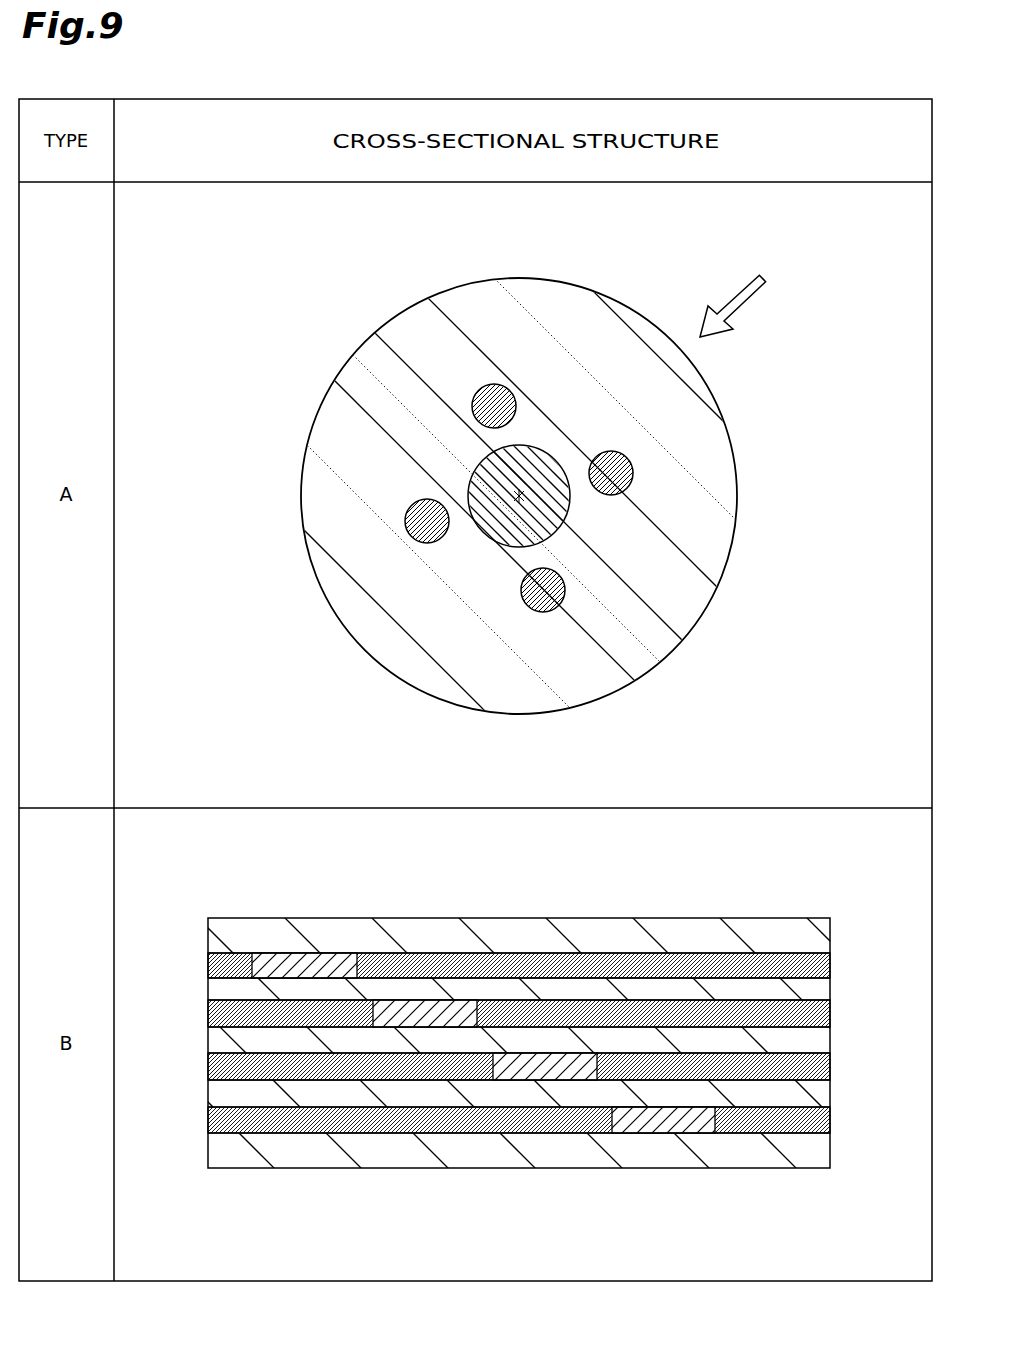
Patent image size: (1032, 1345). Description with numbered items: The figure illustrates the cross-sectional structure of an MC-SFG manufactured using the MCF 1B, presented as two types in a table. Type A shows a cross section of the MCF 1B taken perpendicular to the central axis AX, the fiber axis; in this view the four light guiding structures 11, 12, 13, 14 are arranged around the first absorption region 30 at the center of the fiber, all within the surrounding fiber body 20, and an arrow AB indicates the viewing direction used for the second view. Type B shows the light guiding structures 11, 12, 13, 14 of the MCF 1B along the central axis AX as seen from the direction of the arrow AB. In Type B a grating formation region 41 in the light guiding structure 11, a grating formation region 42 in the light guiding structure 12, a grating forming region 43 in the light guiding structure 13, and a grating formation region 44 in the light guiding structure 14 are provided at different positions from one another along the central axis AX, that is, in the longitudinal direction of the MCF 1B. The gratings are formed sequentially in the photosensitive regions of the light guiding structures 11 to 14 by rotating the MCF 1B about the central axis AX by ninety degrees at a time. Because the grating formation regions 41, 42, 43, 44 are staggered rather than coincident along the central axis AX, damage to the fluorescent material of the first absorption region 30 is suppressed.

The MCF 1B is at (626, 282).
The cladding / base body 20 is at (729, 500).
The first absorption region 30 is at (560, 508).
The central axis AX is at (519, 496).
The arrow AB is at (745, 305).
The light guiding structure 11 is at (493, 392).
The light guiding structure 12 is at (629, 463).
The light guiding structure 13 is at (538, 606).
The light guiding structure 14 is at (404, 524).
The grating formation region 41 is at (307, 967).
The grating formation region 42 is at (428, 1015).
The grating forming region 43 is at (660, 1120).
The grating formation region 44 is at (553, 1070).